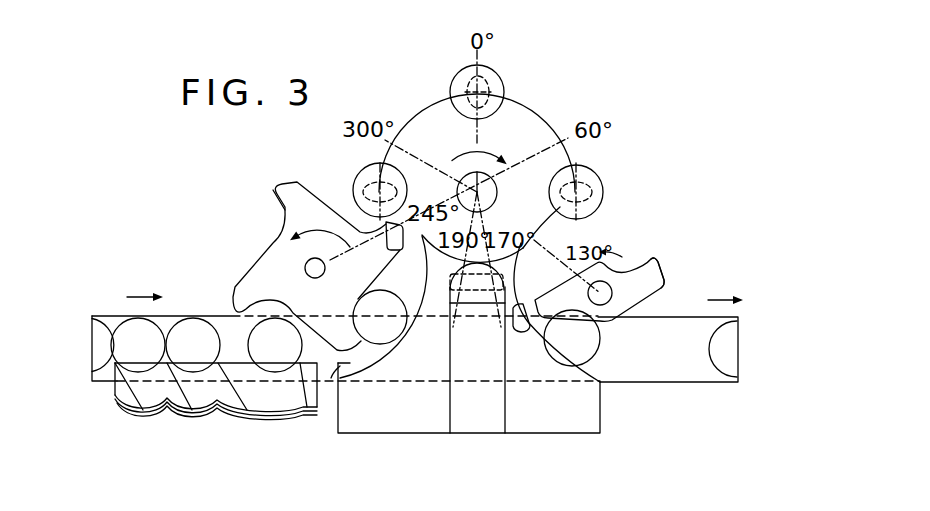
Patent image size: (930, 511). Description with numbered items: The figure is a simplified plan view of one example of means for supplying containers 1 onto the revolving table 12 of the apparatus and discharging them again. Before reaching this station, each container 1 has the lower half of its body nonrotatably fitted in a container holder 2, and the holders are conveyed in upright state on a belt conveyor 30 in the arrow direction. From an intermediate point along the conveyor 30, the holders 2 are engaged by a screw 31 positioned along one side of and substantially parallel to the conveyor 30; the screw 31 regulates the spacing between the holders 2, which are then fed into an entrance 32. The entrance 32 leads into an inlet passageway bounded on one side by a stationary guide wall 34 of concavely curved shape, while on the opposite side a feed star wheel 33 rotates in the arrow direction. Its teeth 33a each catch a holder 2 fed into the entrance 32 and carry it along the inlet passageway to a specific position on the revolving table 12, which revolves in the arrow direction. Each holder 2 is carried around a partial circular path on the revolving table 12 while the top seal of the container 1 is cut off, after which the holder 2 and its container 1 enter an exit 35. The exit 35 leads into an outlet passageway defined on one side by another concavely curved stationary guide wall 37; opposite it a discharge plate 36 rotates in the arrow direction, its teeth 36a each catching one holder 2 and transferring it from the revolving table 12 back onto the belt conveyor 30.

The container 1 is at (462, 77).
The container holder 2 is at (498, 72).
The revolving table 12 is at (526, 111).
The belt conveyor 30 is at (228, 321).
The screw 31 is at (230, 399).
The entrance 32 is at (337, 368).
The feed star wheel 33 is at (272, 242).
The teeth 33a is at (285, 184).
The stationary guide wall 34 is at (419, 296).
The exit 35 is at (533, 272).
The discharge plate 36 is at (625, 264).
The teeth 36a is at (662, 273).
The stationary guide wall 37 is at (517, 323).